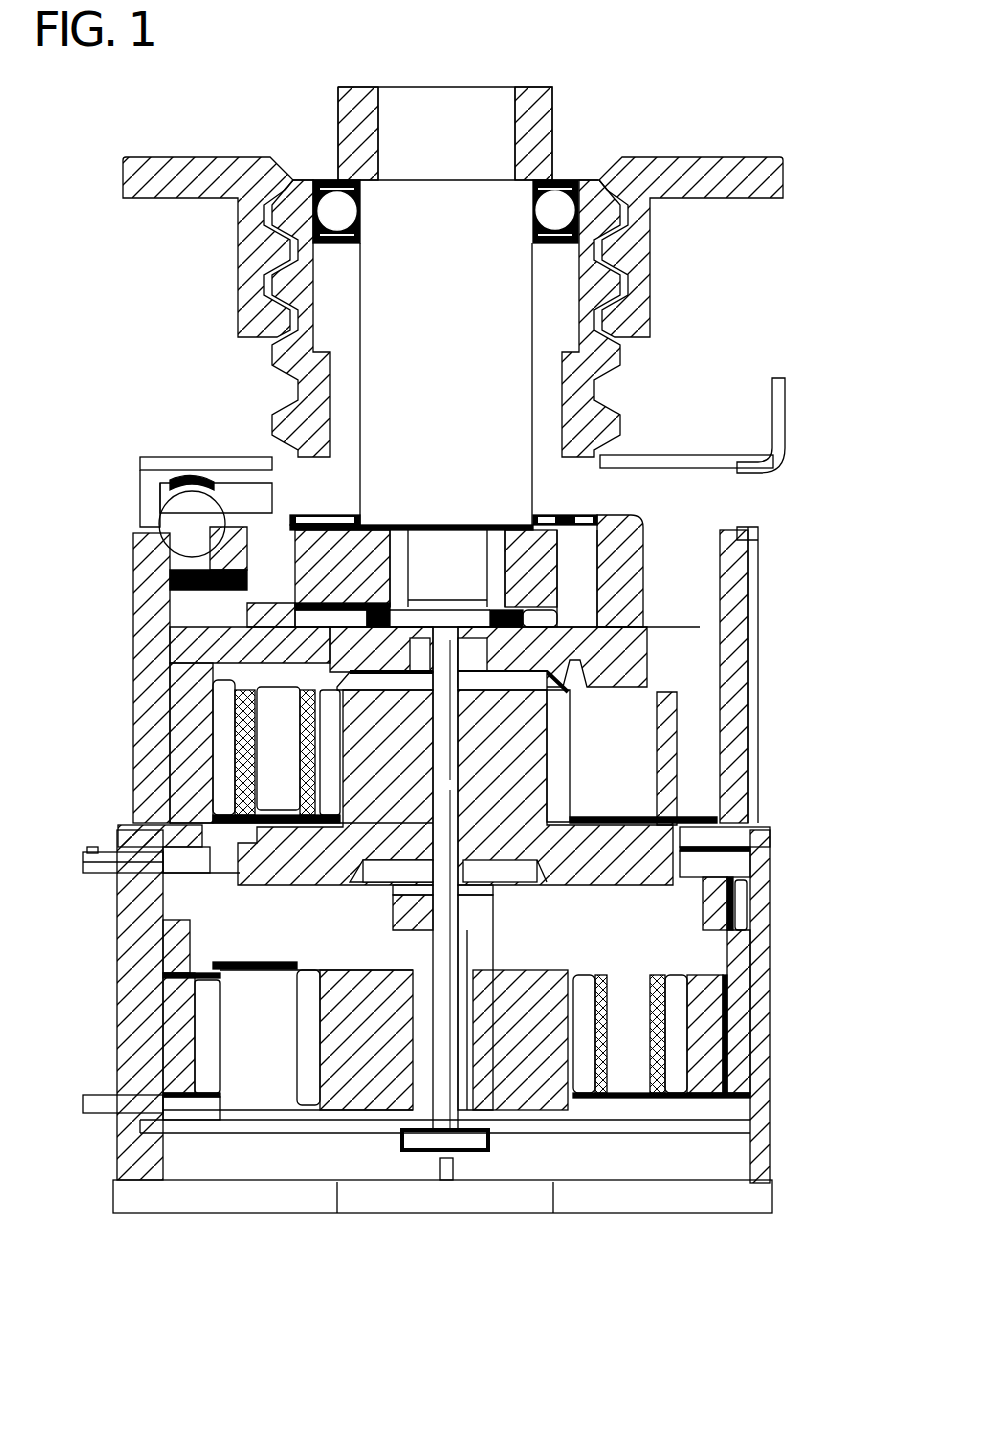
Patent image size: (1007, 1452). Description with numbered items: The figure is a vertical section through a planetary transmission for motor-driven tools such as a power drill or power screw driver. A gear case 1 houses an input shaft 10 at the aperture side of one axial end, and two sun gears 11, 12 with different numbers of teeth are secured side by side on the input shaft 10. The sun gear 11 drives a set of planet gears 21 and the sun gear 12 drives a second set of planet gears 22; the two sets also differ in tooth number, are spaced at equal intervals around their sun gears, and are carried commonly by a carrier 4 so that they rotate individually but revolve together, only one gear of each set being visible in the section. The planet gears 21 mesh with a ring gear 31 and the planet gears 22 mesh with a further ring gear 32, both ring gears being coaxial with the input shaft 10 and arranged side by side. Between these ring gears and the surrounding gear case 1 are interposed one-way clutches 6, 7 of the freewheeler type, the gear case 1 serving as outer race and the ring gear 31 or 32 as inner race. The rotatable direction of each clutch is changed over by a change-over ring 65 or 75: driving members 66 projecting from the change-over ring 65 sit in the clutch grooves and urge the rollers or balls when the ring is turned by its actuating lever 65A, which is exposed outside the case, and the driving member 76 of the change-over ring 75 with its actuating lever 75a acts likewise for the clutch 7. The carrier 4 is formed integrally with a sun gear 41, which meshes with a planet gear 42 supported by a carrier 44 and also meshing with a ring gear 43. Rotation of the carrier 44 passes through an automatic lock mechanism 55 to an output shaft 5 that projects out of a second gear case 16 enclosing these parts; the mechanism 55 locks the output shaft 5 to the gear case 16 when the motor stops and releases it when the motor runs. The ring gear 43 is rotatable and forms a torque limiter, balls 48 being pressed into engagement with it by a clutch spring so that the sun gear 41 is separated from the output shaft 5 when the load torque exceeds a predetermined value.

The gear case 1 is at (765, 1140).
The carrier 4 is at (717, 810).
The output shaft 5 is at (500, 302).
The one-way clutch 6 is at (757, 1045).
The one-way clutch 7 is at (770, 892).
The input shaft 10 is at (441, 1150).
The sun gear 11 is at (303, 1107).
The sun gear 12 is at (483, 950).
The gear case 16 is at (148, 640).
The planet gears 21 is at (657, 1067).
The planet gears 22 is at (232, 930).
The ring gear 31 is at (177, 1028).
The ring gear 32 is at (167, 918).
The sun gear 41 is at (560, 737).
The planet gear 42 is at (233, 777).
The ring gear 43 is at (192, 710).
The carrier 44 is at (630, 652).
The balls 48 is at (182, 478).
The automatic lock mechanism 55 is at (583, 560).
The change-over ring 65 is at (190, 1108).
The actuating lever 65A is at (95, 1113).
The driving member 66 is at (733, 1008).
The change-over ring 75 is at (140, 884).
The actuating lever 75a is at (97, 852).
The driving member 76 is at (735, 945).